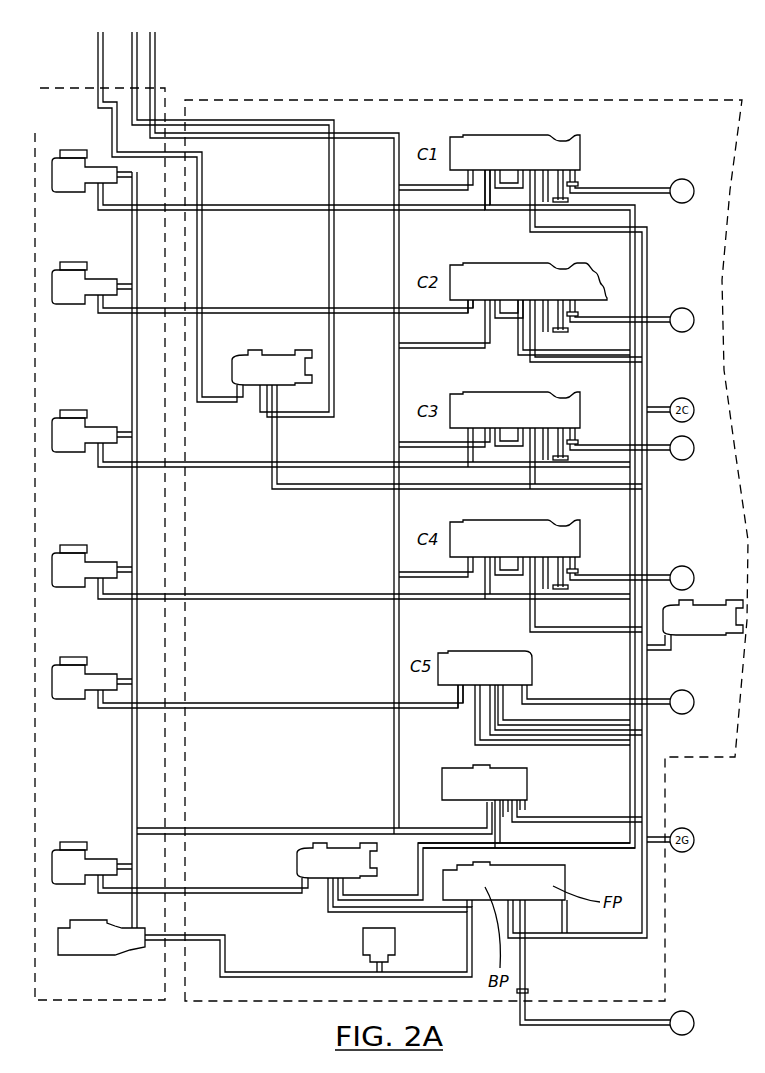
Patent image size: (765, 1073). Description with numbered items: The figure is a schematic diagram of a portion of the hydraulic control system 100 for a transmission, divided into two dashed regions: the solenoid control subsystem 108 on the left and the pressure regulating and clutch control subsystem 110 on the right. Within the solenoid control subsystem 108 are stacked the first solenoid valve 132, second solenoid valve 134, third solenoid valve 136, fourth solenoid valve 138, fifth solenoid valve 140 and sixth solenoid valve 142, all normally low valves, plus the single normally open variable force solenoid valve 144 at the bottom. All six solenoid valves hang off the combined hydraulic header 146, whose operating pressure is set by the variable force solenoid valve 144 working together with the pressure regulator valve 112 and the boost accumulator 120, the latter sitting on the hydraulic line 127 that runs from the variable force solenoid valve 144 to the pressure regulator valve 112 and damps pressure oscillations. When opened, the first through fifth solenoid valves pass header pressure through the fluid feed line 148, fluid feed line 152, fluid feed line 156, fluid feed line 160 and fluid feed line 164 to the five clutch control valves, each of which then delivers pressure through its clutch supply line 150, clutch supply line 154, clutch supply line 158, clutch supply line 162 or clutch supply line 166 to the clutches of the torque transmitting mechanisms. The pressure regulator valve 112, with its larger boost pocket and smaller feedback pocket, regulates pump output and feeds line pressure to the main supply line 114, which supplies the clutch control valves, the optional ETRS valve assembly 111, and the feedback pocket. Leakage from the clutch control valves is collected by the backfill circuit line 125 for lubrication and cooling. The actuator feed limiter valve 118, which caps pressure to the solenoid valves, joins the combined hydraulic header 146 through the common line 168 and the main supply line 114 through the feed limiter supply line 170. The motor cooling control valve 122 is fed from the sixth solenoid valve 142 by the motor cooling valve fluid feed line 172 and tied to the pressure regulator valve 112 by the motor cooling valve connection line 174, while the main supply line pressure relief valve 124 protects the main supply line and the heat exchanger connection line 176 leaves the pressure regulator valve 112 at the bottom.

The hydraulic control system 100 is at (650, 82).
The solenoid control subsystem 108 is at (57, 85).
The pressure regulating and clutch control subsystem 110 is at (548, 97).
The ETRS valve assembly 111 is at (272, 350).
The pressure regulator valve 112 is at (565, 873).
The main supply line 114 is at (649, 748).
The actuator feed limiter valve 118 is at (442, 782).
The boost accumulator 120 is at (362, 940).
The motor cooling control valve 122 is at (373, 867).
The main supply line pressure relief valve 124 is at (707, 637).
The backfill circuit line 125 is at (657, 405).
The hydraulic line 127 is at (250, 978).
The first solenoid valve 132 is at (70, 202).
The second solenoid valve 134 is at (70, 305).
The third solenoid valve 136 is at (70, 460).
The fourth solenoid valve 138 is at (70, 590).
The fifth solenoid valve 140 is at (70, 700).
The sixth solenoid valve 142 is at (68, 840).
The variable force solenoid valve 144 is at (85, 957).
The combined hydraulic header 146 is at (131, 785).
The fluid feed line 148 is at (235, 203).
The clutch supply line 150 is at (660, 185).
The fluid feed line 152 is at (235, 307).
The clutch supply line 154 is at (657, 315).
The fluid feed line 156 is at (220, 470).
The clutch supply line 158 is at (658, 456).
The fluid feed line 160 is at (225, 590).
The clutch supply line 162 is at (659, 572).
The fluid feed line 164 is at (225, 702).
The clutch supply line 166 is at (659, 695).
The common line 168 is at (223, 828).
The feed limiter supply line 170 is at (590, 815).
The motor cooling valve fluid feed line 172 is at (235, 893).
The motor cooling valve connection line 174 is at (320, 896).
The heat exchanger connection line 176 is at (605, 1027).